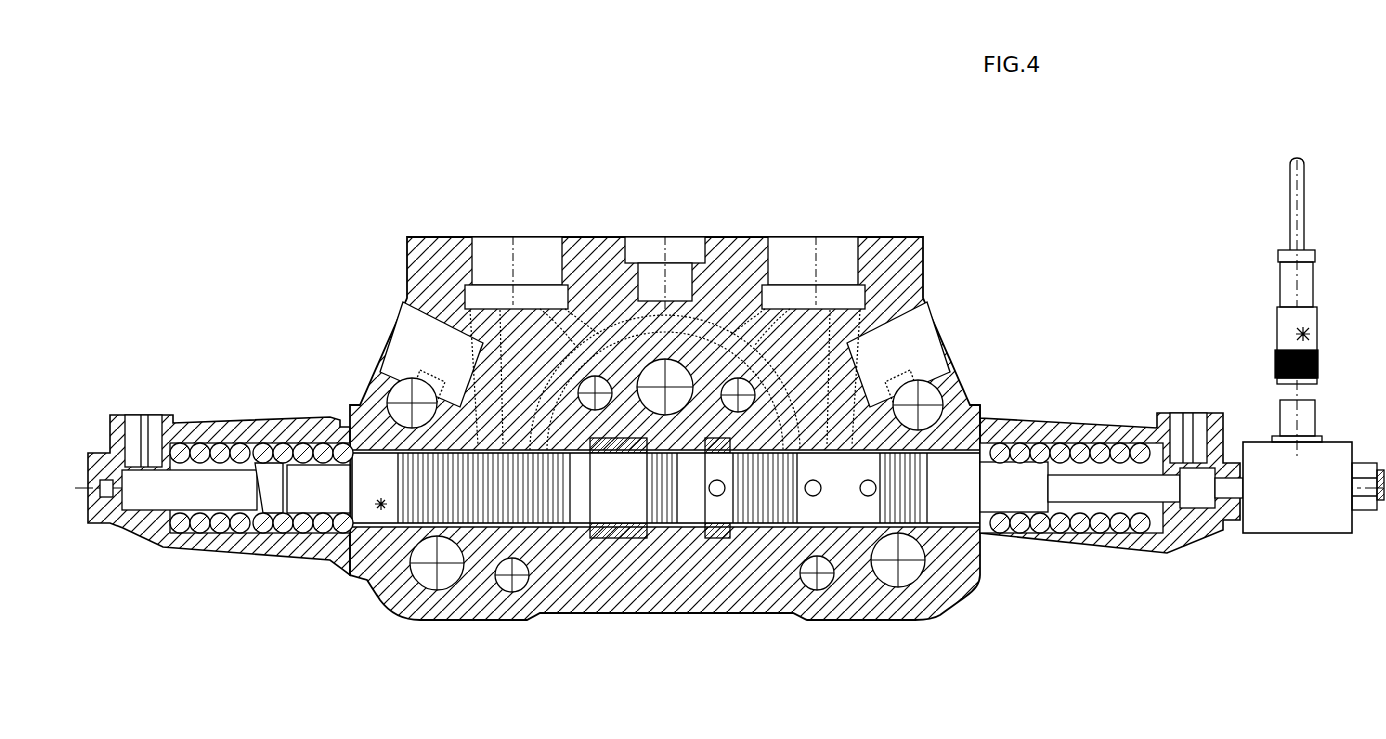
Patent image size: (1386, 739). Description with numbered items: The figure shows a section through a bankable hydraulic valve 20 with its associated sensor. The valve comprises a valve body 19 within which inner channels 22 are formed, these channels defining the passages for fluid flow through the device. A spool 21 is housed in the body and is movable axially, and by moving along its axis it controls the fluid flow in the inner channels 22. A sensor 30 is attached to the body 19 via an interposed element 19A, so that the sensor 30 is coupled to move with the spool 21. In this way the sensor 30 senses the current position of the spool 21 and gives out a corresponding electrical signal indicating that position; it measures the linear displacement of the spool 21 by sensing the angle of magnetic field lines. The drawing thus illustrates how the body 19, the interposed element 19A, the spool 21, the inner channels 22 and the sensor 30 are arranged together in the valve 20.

The valve body 19 is at (935, 578).
The interposed element 19A is at (1100, 428).
The hydraulic valve 20 is at (380, 238).
The spool 21 is at (960, 470).
The inner channels 22 is at (840, 363).
The sensor 30 is at (1290, 522).